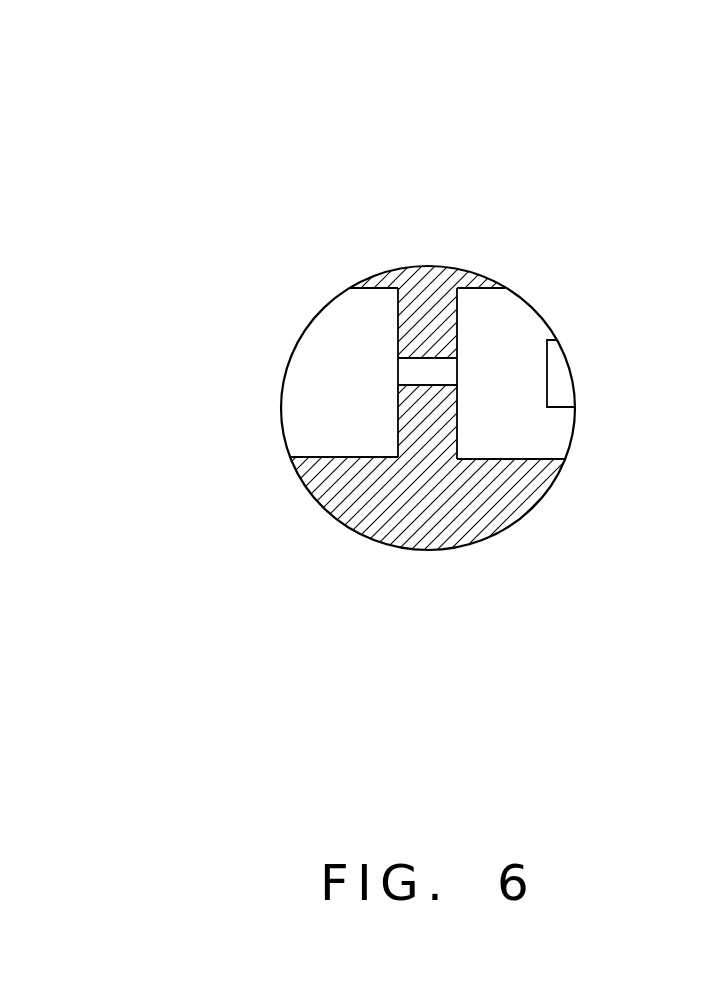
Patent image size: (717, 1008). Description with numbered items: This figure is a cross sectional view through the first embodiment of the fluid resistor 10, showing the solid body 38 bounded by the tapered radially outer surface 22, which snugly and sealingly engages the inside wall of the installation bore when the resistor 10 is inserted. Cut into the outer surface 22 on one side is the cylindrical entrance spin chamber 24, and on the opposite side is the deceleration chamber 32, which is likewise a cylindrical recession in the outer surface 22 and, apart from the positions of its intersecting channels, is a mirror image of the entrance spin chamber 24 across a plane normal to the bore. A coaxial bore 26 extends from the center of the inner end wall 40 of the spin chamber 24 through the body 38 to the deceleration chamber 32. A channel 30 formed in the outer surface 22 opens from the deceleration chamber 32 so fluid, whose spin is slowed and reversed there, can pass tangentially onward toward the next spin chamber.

The fluid resistor 10 is at (396, 346).
The radially outer surface 22 is at (396, 448).
The entrance spin chamber 24 is at (343, 328).
The coaxial bore 26 is at (428, 368).
The channel 30 is at (558, 372).
The deceleration chamber 32 is at (493, 318).
The body 38 is at (497, 513).
The inner end wall 40 is at (397, 415).